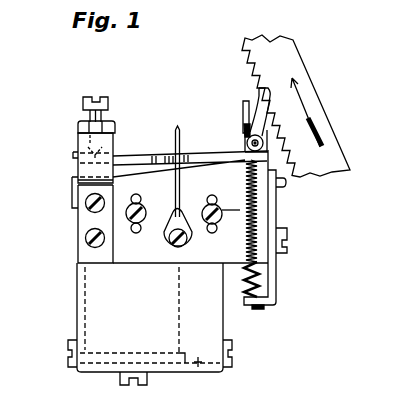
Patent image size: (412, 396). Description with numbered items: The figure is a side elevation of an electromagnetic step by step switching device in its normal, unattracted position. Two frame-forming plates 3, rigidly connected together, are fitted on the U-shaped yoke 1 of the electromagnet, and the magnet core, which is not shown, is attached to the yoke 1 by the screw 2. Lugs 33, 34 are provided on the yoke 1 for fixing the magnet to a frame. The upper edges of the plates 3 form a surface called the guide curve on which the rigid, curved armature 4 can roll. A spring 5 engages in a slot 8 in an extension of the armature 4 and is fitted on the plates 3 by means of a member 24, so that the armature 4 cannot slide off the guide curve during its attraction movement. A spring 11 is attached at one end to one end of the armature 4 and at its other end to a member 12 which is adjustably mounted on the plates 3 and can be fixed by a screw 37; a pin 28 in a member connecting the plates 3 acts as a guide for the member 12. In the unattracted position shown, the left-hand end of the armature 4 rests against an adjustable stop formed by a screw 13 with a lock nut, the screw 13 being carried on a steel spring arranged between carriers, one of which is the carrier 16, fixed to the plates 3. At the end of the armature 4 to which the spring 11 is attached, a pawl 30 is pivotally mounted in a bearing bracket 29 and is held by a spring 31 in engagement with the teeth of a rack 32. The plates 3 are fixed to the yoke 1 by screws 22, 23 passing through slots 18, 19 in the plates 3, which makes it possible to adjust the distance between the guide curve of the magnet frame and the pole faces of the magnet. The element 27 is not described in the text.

The yoke 1 is at (198, 367).
The screw 2 is at (120, 378).
The frame-forming plates 3 is at (226, 255).
The armature 4 is at (122, 157).
The spring 5 is at (178, 130).
The slot 8 is at (182, 157).
The spring 11 is at (250, 277).
The member 12 is at (269, 300).
The screw 13 is at (83, 103).
The carrier 16 is at (85, 228).
The slot 18 is at (137, 193).
The slot 19 is at (212, 195).
The screw 22 is at (127, 216).
The screw 23 is at (240, 210).
The member 24 is at (163, 233).
The bracket tab 27 is at (72, 198).
The pin 28 is at (286, 185).
The bearing bracket 29 is at (245, 150).
The pawl 30 is at (258, 95).
The spring 31 is at (243, 104).
The rack 32 is at (301, 80).
The lug 33 is at (68, 351).
The lug 34 is at (232, 351).
The screw 37 is at (289, 233).